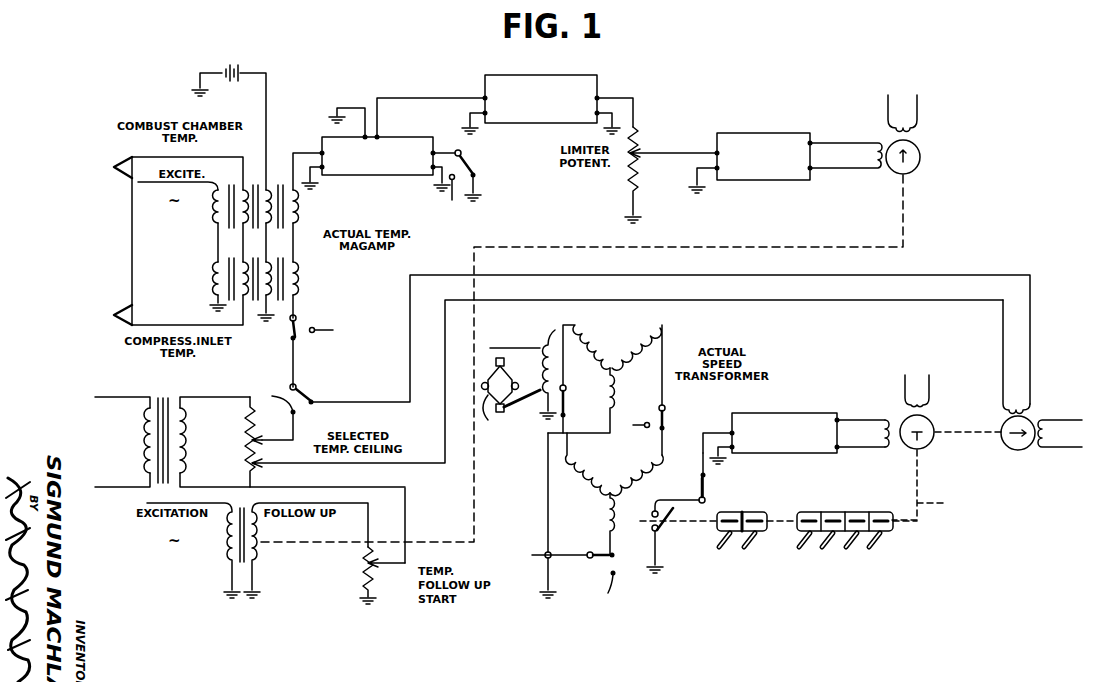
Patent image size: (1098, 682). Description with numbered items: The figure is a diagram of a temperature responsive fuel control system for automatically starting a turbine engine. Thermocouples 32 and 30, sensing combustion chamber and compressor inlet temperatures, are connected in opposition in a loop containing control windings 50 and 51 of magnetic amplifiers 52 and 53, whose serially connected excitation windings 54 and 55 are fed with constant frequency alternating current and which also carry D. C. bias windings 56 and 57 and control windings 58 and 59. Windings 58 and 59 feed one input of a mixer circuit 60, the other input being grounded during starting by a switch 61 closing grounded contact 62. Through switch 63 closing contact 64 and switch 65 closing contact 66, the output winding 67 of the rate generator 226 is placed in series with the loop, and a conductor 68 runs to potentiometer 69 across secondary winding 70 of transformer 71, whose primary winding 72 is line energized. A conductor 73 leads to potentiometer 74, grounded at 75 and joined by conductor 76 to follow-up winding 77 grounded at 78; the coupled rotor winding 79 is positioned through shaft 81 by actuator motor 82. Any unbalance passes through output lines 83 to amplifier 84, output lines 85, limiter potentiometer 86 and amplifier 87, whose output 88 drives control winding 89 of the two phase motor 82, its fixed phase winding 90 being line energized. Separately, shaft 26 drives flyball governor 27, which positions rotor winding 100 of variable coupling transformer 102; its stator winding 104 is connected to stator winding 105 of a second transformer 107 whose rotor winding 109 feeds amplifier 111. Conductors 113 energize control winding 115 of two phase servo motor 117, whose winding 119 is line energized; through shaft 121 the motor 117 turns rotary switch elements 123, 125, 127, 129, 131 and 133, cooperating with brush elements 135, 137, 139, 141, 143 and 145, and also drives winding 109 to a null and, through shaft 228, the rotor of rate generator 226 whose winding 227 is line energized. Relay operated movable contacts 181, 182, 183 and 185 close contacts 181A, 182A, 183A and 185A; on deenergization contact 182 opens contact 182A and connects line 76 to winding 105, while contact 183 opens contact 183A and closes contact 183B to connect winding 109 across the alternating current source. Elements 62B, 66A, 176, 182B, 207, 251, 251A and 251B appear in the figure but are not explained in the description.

The shaft 26 is at (505, 364).
The flyball speed governor 27 is at (494, 416).
The thermocouple 30 is at (114, 315).
The thermocouple 32 is at (114, 167).
The control winding 50 is at (243, 188).
The control winding 51 is at (245, 296).
The magnetic amplifier 52 is at (310, 209).
The magnetic amplifier 53 is at (311, 282).
The excitation winding 54 is at (214, 208).
The excitation winding 55 is at (213, 278).
The D. C. bias winding 56 is at (265, 188).
The D. C. bias winding 57 is at (266, 318).
The control winding 58 is at (298, 218).
The control winding 59 is at (298, 295).
The mixer circuit 60 is at (328, 137).
The switch 61 is at (466, 161).
The grounded contact 62 is at (476, 175).
The switch contact 62B is at (449, 185).
The switch 63 is at (299, 327).
The contact 64 is at (297, 341).
The switch 65 is at (300, 393).
The contact 66 is at (314, 406).
The switch contact 66A is at (270, 410).
The output winding 67 is at (1022, 406).
The conductor 68 is at (300, 464).
The potentiometer 69 is at (247, 428).
The secondary winding 70 is at (187, 450).
The transformer 71 is at (171, 391).
The primary winding 72 is at (146, 421).
The conductor 73 is at (405, 500).
The potentiometer 74 is at (362, 560).
The ground 75 is at (366, 591).
The conductor 76 is at (368, 512).
The follow-up winding 77 is at (257, 548).
The ground 78 is at (256, 590).
The rotor winding 79 is at (228, 541).
The shaft 81 is at (666, 247).
The actuator motor 82 is at (926, 167).
The output lines 83 is at (378, 97).
The amplifier 84 is at (510, 75).
The output lines 85 is at (633, 112).
The limiter potentiometer 86 is at (638, 167).
The amplifier 87 is at (757, 133).
The output 88 is at (838, 143).
The control winding 89 is at (880, 170).
The fixed phase winding 90 is at (917, 129).
The rotor winding 100 is at (522, 366).
The variable coupling transformer 102 is at (596, 325).
The stator winding 104 is at (605, 379).
The stator winding 105 is at (615, 464).
The second variable coupling transformer 107 is at (598, 498).
The rotor winding 109 is at (662, 533).
The amplifier 111 is at (802, 413).
The conductors 113 is at (872, 420).
The control winding 115 is at (888, 447).
The servo motor 117 is at (941, 417).
The winding 119 is at (905, 400).
The shaft 121 is at (946, 476).
The rotary switch element 123 is at (880, 511).
The rotary switch element 125 is at (857, 511).
The rotary switch element 127 is at (833, 511).
The rotary switch element 129 is at (810, 511).
The rotary switch element 131 is at (760, 511).
The rotary switch element 133 is at (732, 511).
The brush element 135 is at (872, 549).
The brush element 137 is at (849, 549).
The brush element 139 is at (825, 549).
The brush element 141 is at (801, 549).
The brush element 143 is at (747, 549).
The brush element 145 is at (721, 549).
The conductor 176 is at (596, 592).
The movable contact 181 is at (551, 566).
The contact 181A is at (551, 574).
The movable contact 182 is at (589, 538).
The contact 182A is at (611, 553).
The switch contact 182B is at (616, 577).
The movable switch contact 183 is at (668, 516).
The contact 183A is at (706, 476).
The contact 183B is at (684, 486).
The movable contact 185 is at (566, 390).
The contact 185A is at (590, 423).
The switch contact 207 is at (546, 552).
The rate generator 226 is at (1041, 453).
The winding 227 is at (1042, 425).
The shaft 228 is at (950, 440).
The switch 251 is at (666, 412).
The switch contact 251A is at (666, 428).
The switch contact 251B is at (650, 436).